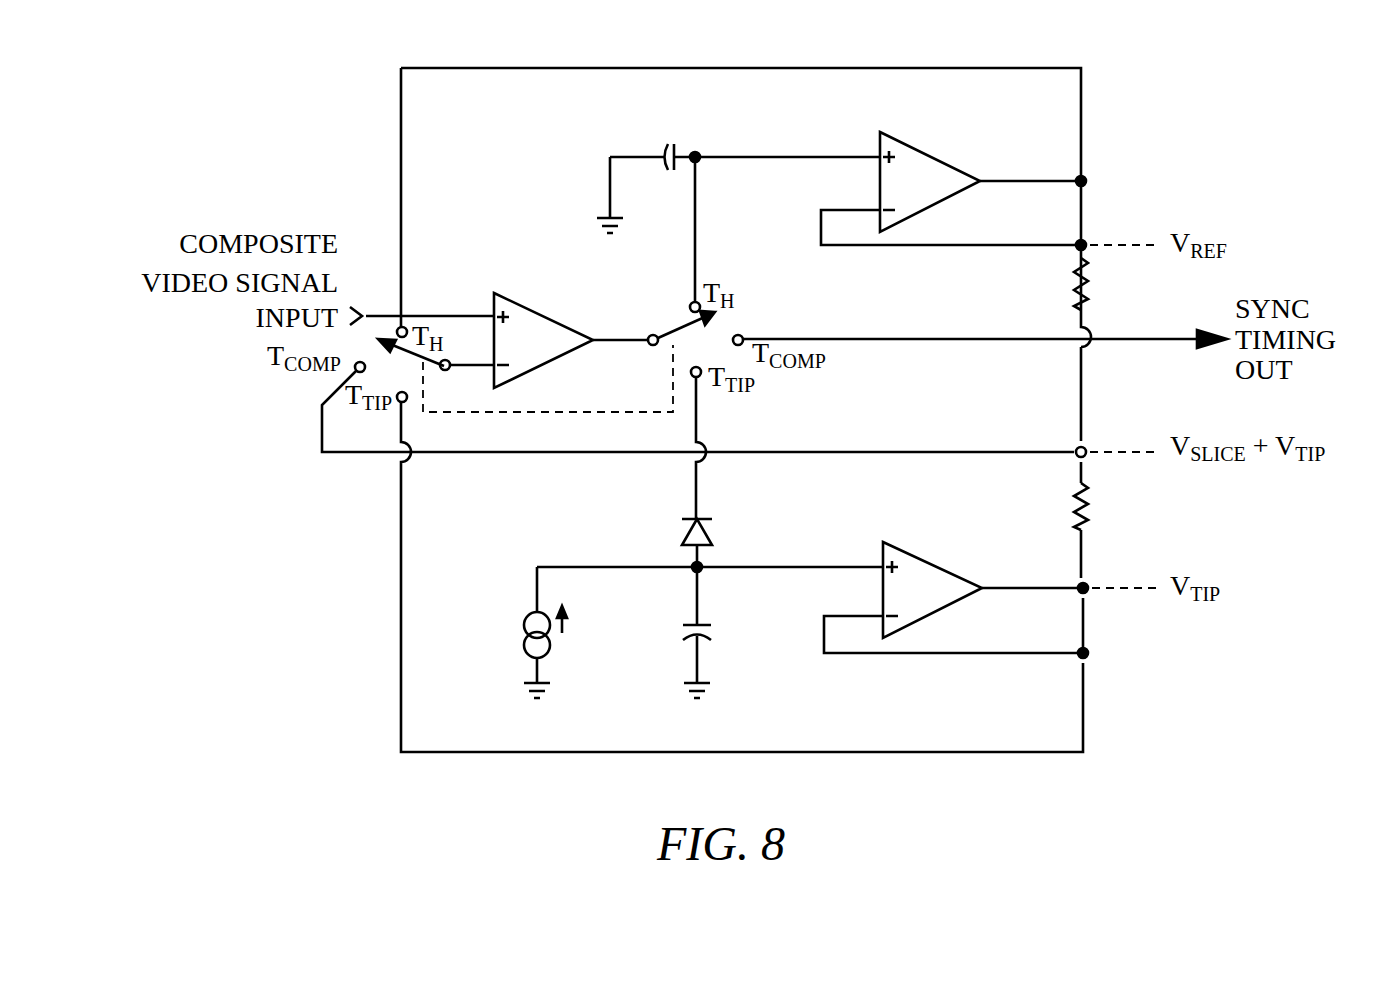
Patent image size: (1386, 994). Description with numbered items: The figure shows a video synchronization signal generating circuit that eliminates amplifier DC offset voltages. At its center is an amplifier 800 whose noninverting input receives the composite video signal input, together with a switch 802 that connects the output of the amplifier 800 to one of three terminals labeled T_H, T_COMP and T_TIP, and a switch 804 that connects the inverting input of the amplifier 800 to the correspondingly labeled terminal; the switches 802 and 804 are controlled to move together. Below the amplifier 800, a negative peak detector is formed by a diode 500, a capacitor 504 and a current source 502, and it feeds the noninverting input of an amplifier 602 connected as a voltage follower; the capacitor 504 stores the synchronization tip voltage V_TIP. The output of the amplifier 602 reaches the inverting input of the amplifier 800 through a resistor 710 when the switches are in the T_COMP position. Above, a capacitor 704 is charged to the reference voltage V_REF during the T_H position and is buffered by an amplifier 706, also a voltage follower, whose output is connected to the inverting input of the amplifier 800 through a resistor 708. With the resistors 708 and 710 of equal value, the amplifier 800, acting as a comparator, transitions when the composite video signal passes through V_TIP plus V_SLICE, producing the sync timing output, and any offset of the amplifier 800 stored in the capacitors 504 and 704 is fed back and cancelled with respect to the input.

The diode 500 is at (683, 530).
The current source 502 is at (530, 612).
The capacitor 504 is at (707, 623).
The amplifier 602 is at (937, 564).
The capacitor 704 is at (680, 150).
The amplifier 706 is at (933, 155).
The resistor 708 is at (1073, 285).
The resistor 710 is at (1070, 494).
The amplifier 800 is at (543, 365).
The switch 802 is at (675, 328).
The switch 804 is at (425, 360).